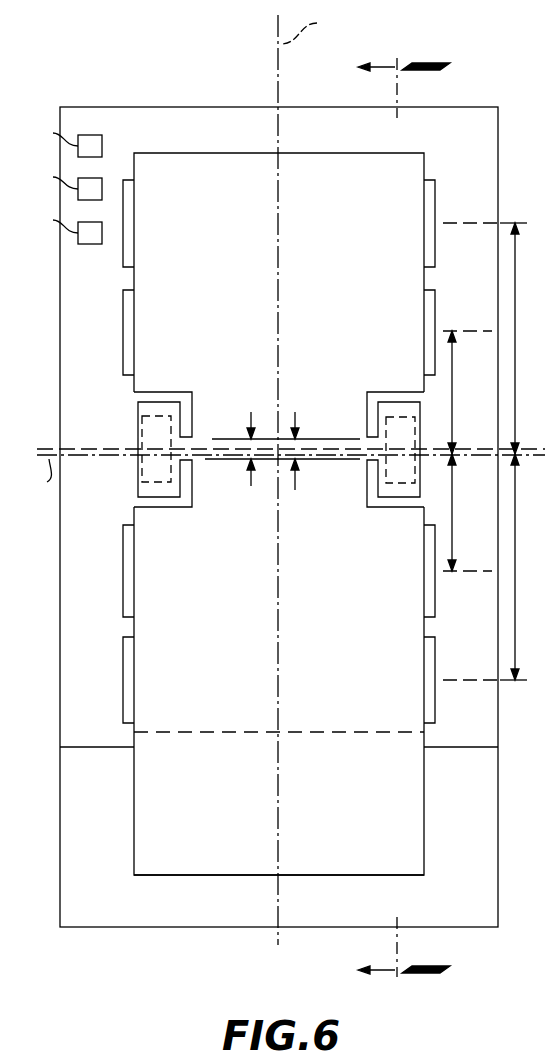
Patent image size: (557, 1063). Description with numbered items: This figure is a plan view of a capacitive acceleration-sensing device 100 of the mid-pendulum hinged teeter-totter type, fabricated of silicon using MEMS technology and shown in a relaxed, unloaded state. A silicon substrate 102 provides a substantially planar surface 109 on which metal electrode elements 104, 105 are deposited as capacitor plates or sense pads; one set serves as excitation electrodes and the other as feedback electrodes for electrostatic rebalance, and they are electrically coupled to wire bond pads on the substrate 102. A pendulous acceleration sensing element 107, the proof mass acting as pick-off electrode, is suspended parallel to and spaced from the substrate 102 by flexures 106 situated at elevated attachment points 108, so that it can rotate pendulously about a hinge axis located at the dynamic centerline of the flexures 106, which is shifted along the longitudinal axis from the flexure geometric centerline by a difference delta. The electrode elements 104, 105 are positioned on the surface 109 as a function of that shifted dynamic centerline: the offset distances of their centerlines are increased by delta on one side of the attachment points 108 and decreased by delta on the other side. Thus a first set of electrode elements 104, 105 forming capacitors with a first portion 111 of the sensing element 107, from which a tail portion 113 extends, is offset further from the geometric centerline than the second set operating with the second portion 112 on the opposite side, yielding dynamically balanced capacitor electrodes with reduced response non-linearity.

The capacitive acceleration-sensing device 100 is at (106, 54).
The silicon substrate 102 is at (212, 107).
The electrode element 104 is at (434, 296).
The electrode element 105 is at (434, 190).
The flexure 106 is at (193, 443).
The pendulous acceleration sensing element 107 is at (356, 875).
The elevated attachment point 108 is at (158, 447).
The substantially planar surface 109 is at (101, 566).
The first portion 111 is at (366, 641).
The second portion 112 is at (366, 296).
The tail portion 113 is at (195, 841).